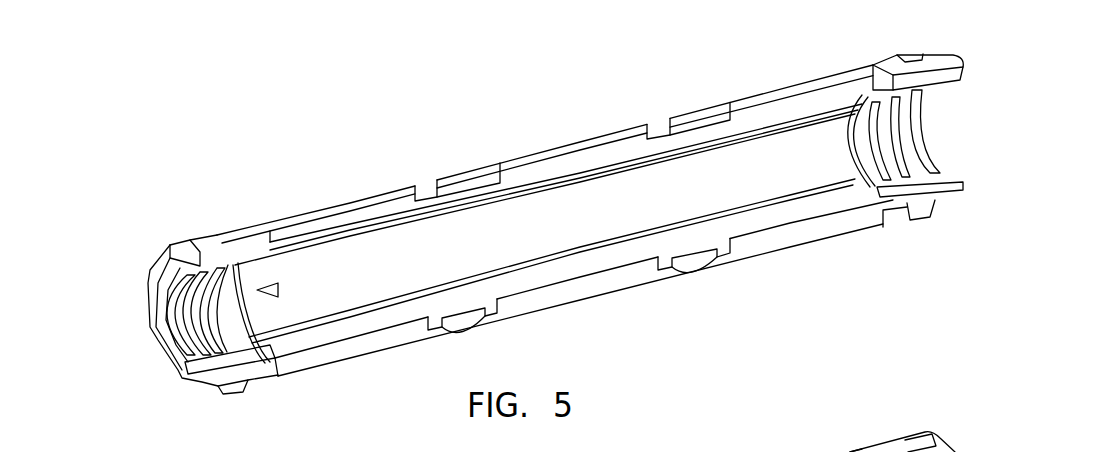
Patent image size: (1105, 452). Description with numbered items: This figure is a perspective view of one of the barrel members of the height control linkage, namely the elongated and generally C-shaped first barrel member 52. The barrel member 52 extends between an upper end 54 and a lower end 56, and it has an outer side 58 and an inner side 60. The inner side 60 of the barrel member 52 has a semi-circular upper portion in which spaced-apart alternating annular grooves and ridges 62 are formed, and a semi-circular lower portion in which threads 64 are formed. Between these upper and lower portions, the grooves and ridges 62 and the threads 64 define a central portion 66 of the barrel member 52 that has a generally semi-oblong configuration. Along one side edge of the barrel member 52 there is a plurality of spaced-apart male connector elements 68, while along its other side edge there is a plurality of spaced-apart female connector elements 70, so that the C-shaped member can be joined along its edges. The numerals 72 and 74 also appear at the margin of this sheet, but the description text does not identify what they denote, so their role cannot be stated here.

The first barrel member 52 is at (600, 108).
The upper end 54 is at (150, 368).
The lower end 56 is at (953, 112).
The outer side 58 is at (150, 311).
The inner side 60 is at (632, 224).
The annular grooves and ridges 62 is at (192, 328).
The threads 64 is at (920, 150).
The central portion 66 is at (505, 267).
The male connector elements 68 is at (697, 272).
The female connector elements 70 is at (470, 178).
The component 72 is at (678, 451).
The component 74 is at (1045, 451).